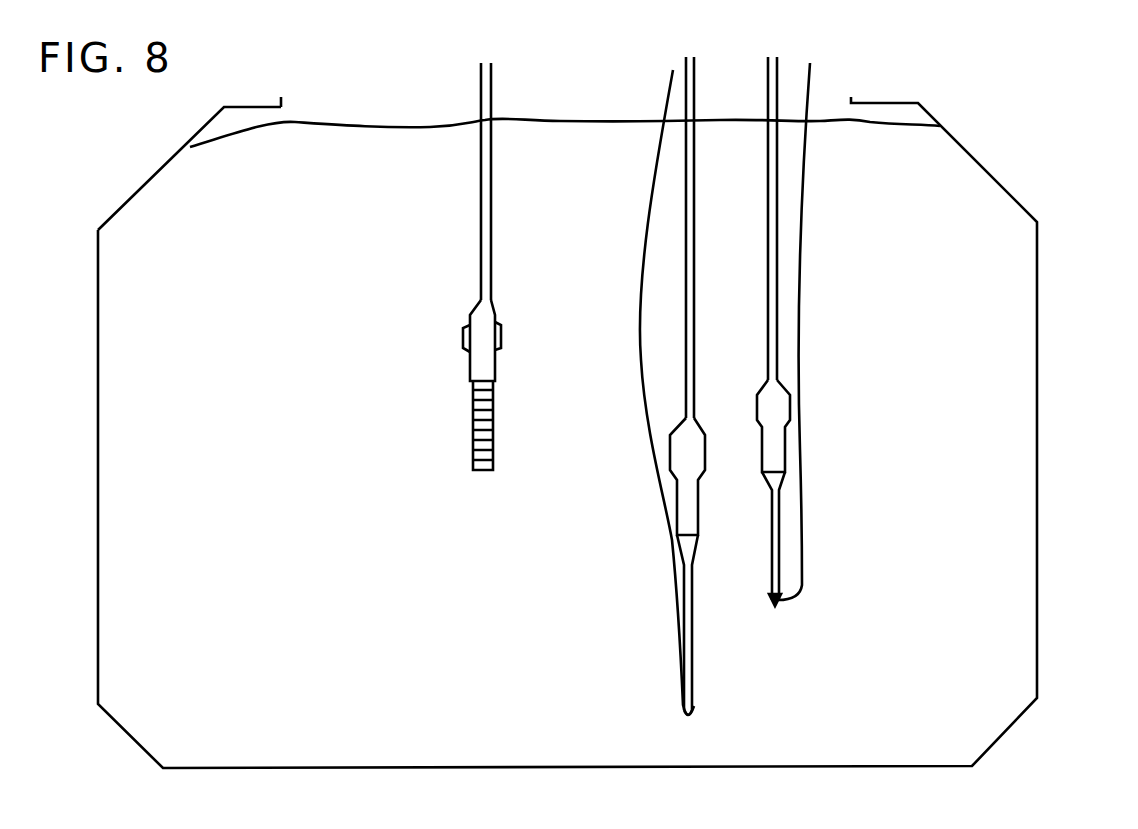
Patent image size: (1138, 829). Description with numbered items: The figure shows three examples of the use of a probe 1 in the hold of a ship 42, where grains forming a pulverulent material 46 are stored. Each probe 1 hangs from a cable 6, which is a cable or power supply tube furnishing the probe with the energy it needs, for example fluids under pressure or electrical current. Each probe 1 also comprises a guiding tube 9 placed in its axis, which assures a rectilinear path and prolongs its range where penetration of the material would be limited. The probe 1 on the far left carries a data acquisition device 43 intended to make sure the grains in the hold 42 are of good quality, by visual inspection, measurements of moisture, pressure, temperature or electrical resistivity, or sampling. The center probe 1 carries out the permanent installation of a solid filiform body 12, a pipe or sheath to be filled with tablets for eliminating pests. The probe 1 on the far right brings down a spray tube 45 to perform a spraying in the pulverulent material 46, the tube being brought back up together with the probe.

The probe 1 is at (499, 368).
The cable 6 is at (492, 258).
The guiding tube 9 is at (695, 625).
The solid filiform body 12 is at (646, 440).
The hold of a ship 42 is at (1037, 345).
The data acquisition device 43 is at (496, 445).
The spray tube 45 is at (799, 290).
The pulverulent material 46 is at (930, 572).